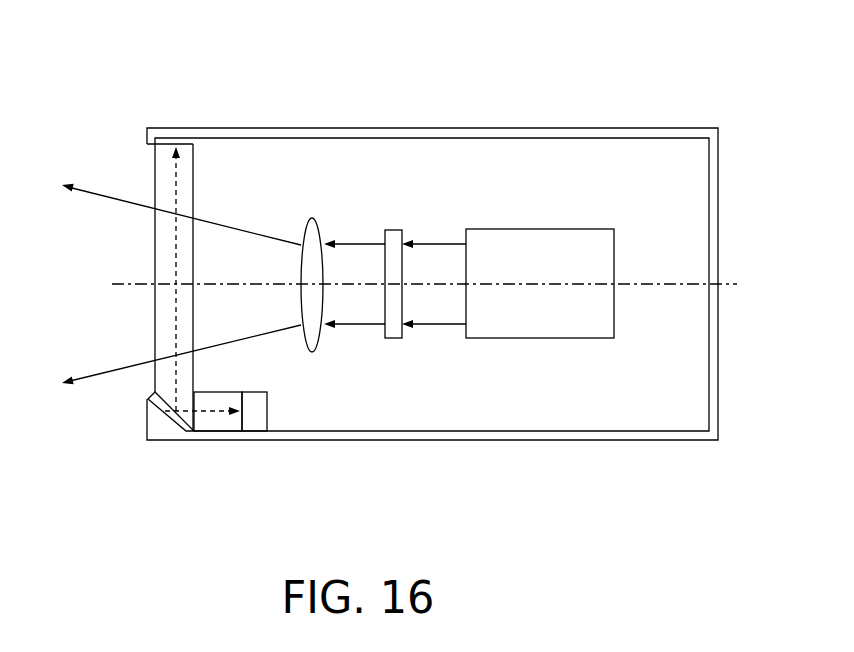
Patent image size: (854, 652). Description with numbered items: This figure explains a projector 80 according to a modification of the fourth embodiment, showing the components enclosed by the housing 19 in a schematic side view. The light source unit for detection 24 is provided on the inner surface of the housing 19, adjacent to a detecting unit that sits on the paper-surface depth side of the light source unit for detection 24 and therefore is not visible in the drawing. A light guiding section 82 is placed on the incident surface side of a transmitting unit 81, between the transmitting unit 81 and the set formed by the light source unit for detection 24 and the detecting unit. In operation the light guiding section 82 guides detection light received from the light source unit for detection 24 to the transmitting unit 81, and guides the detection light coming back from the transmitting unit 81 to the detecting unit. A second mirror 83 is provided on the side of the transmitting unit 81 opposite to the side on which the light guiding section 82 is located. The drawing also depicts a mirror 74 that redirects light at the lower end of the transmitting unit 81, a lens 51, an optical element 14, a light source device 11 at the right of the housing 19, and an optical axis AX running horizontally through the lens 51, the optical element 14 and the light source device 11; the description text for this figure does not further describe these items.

The projector 80 is at (148, 74).
The second mirror 83 is at (188, 143).
The transmitting unit 81 is at (162, 373).
The mirror 74 is at (178, 420).
The light guiding section 82 is at (212, 425).
The light source unit for detection 24 is at (258, 420).
The lens 51 is at (316, 221).
The optical element 14 is at (393, 230).
The light source device 11 is at (600, 228).
The housing 19 is at (672, 433).
The optical axis AX is at (658, 285).